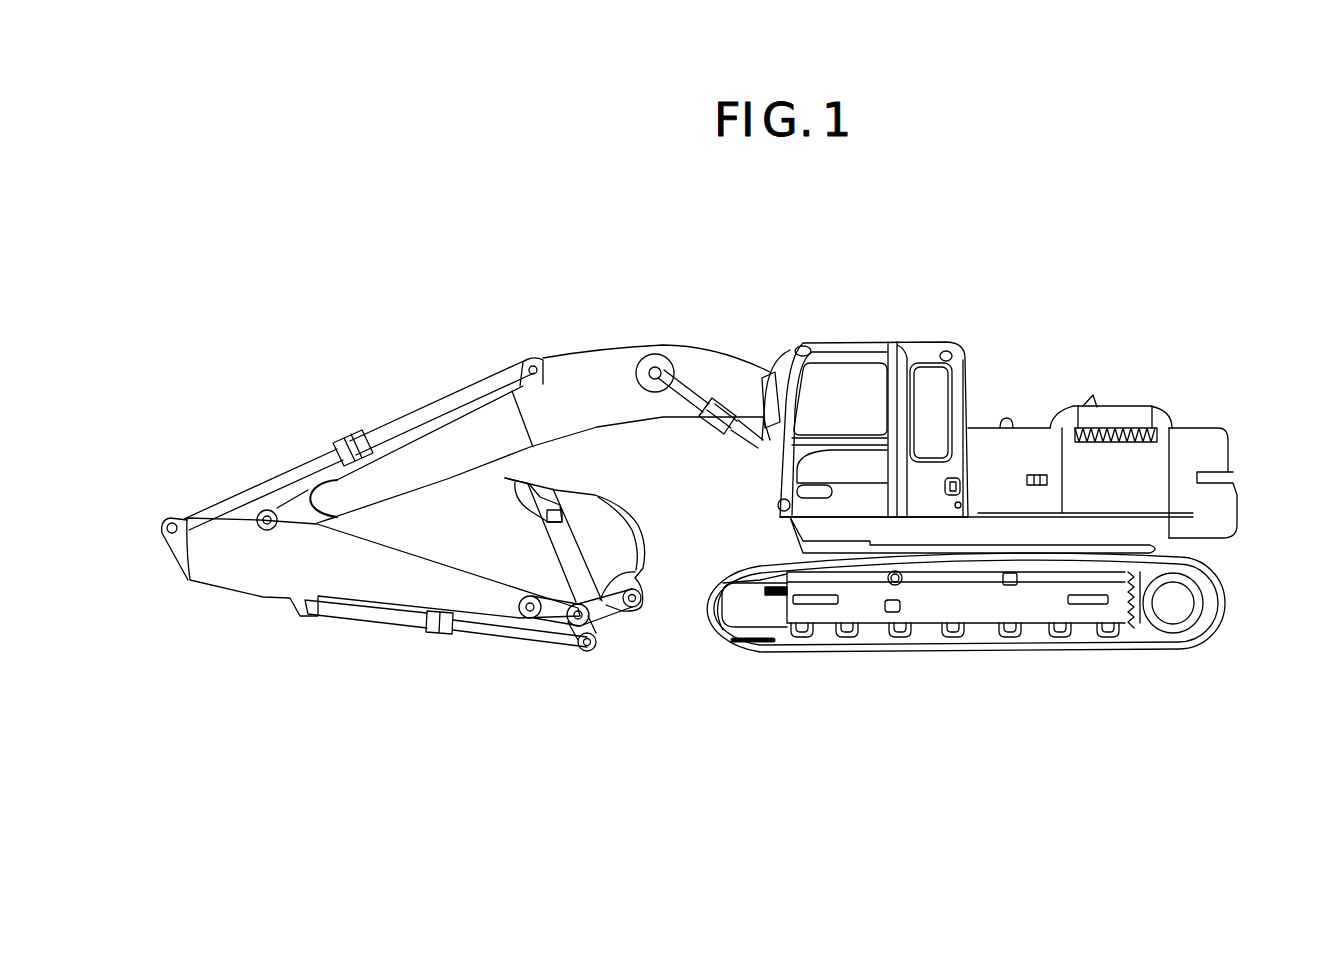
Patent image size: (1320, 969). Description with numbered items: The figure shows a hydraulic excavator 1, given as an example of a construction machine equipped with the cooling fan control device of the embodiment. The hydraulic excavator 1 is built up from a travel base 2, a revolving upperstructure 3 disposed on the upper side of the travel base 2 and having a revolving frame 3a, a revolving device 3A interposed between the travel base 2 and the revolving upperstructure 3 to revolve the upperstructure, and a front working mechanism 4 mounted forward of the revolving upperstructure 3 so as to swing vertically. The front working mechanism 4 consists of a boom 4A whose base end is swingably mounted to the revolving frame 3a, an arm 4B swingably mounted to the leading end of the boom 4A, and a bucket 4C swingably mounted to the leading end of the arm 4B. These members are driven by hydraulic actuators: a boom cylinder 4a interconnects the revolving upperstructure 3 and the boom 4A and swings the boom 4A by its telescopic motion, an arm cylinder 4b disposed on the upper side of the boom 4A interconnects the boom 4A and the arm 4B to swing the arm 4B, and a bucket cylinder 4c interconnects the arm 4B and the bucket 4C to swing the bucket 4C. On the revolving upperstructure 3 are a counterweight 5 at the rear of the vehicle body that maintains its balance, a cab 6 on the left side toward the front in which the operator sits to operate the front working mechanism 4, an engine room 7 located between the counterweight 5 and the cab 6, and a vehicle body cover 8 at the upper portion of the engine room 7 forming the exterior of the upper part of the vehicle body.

The hydraulic excavator 1 is at (1031, 286).
The travel base 2 is at (985, 628).
The revolving upperstructure 3 is at (975, 370).
The revolving device 3A is at (797, 553).
The revolving frame 3a is at (1067, 525).
The front working mechanism 4 is at (621, 328).
The boom 4A is at (563, 393).
The arm 4B is at (290, 573).
The bucket 4C is at (607, 552).
The boom cylinder 4a is at (710, 395).
The arm cylinder 4b is at (375, 436).
The bucket cylinder 4c is at (395, 620).
The counterweight 5 is at (1200, 448).
The cab 6 is at (851, 380).
The engine room 7 is at (1120, 465).
The vehicle body cover 8 is at (1113, 410).